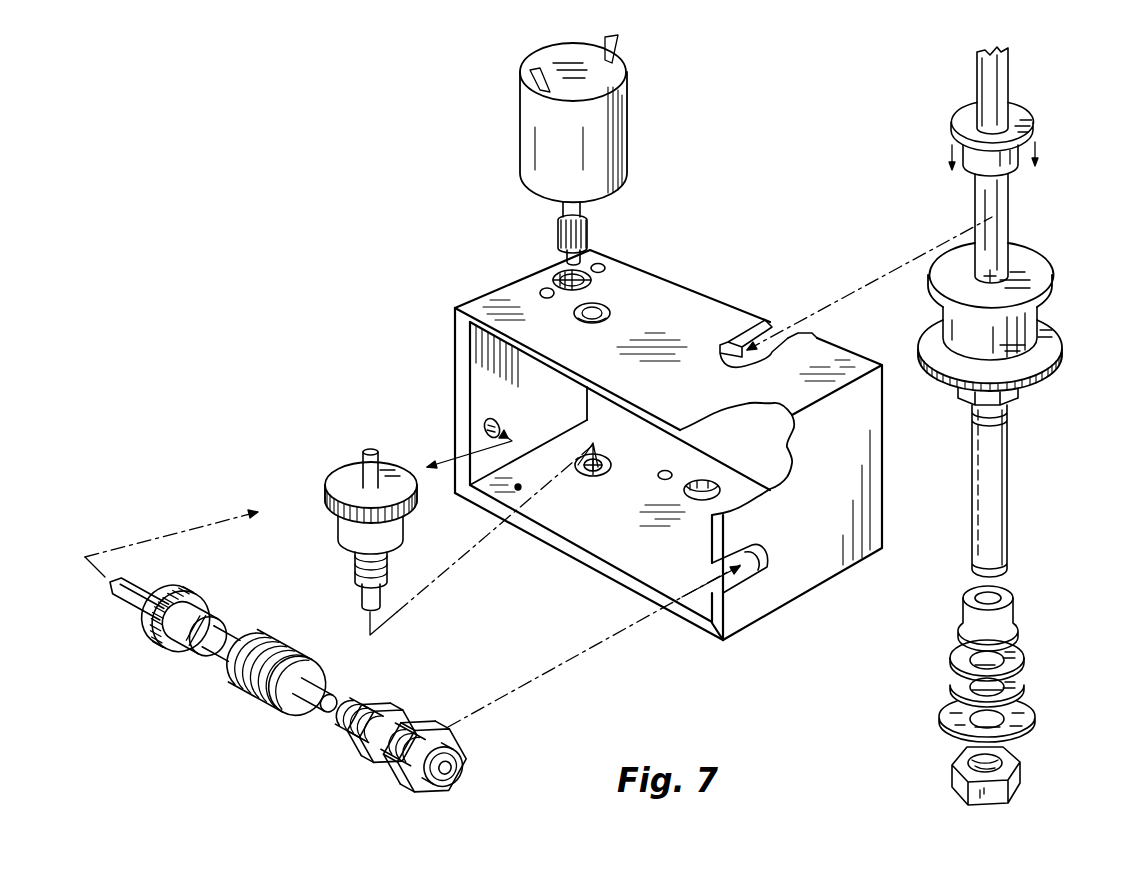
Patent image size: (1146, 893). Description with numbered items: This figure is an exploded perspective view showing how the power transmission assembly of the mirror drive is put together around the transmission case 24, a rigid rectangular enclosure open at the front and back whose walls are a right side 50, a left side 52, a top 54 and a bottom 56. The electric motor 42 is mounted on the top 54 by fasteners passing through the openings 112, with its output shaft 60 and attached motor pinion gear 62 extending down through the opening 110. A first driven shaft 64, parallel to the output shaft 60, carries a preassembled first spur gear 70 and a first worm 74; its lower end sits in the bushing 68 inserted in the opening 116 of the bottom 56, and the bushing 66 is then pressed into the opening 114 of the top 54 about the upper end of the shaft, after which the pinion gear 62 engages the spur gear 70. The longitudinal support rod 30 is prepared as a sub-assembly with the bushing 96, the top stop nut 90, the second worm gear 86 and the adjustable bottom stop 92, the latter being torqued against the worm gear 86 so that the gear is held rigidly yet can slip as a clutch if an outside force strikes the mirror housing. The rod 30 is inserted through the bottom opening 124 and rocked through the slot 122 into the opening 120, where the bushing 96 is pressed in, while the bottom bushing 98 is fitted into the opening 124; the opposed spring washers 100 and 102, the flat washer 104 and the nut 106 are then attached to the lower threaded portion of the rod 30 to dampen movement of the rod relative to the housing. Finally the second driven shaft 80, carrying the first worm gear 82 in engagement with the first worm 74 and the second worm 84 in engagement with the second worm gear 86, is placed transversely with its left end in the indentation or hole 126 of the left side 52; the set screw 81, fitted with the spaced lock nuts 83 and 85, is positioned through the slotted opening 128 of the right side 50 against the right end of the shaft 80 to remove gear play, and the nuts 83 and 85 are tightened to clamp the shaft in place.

The transmission case 24 is at (427, 348).
The longitudinal support rod 30 is at (1010, 68).
The electric motor 42 is at (617, 117).
The right side 50 is at (835, 488).
The left side 52 is at (540, 418).
The top 54 is at (700, 403).
The bottom 56 is at (675, 573).
The output shaft 60 is at (584, 263).
The motor pinion gear 62 is at (558, 230).
The first driven shaft 64 is at (358, 473).
The bushing 66 is at (607, 305).
The bushing 68 is at (590, 478).
The first spur gear 70 is at (333, 482).
The first worm 74 is at (385, 563).
The second driven shaft 80 is at (127, 603).
The set screw 81 is at (462, 768).
The first worm gear 82 is at (157, 648).
The nut 83 is at (402, 785).
The second worm 84 is at (240, 695).
The nut 85 is at (362, 757).
The second worm gear 86 is at (1063, 327).
The top stop nut 90 is at (1033, 265).
The adjustable bottom stop 92 is at (1018, 397).
The bushing 96 is at (1023, 113).
The bottom bushing 98 is at (1010, 603).
The spring washer 100 is at (1018, 658).
The spring washer 102 is at (1015, 685).
The flat washer 104 is at (1028, 712).
The nut 106 is at (1018, 758).
The opening 110 is at (558, 277).
The openings 112 is at (540, 292).
The opening 114 is at (592, 323).
The opening 116 is at (613, 466).
The opening 120 is at (722, 343).
The slot 122 is at (815, 340).
The bottom opening 124 is at (720, 493).
The indentation or hole 126 is at (483, 427).
The slotted opening 128 is at (740, 585).